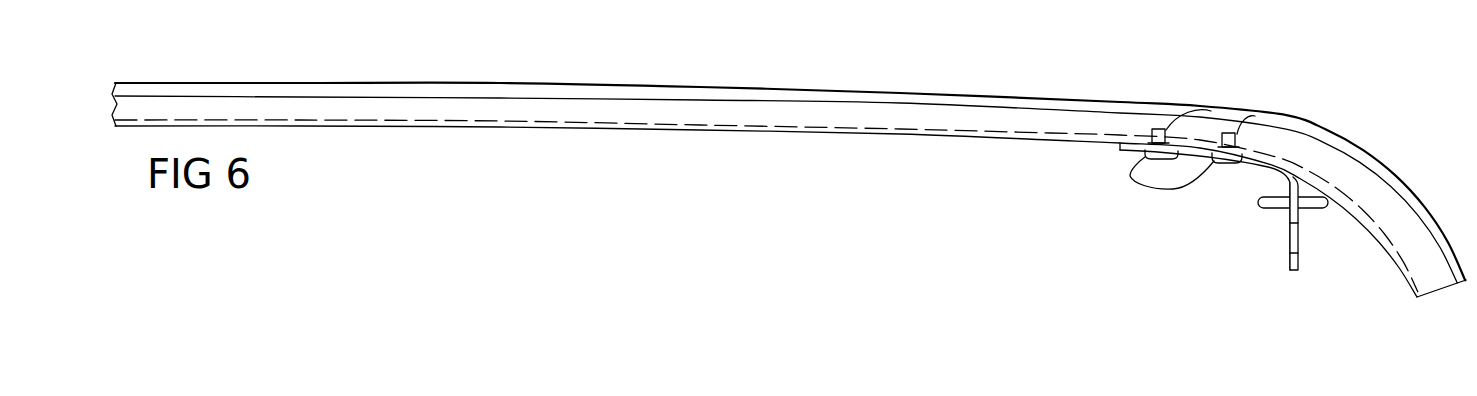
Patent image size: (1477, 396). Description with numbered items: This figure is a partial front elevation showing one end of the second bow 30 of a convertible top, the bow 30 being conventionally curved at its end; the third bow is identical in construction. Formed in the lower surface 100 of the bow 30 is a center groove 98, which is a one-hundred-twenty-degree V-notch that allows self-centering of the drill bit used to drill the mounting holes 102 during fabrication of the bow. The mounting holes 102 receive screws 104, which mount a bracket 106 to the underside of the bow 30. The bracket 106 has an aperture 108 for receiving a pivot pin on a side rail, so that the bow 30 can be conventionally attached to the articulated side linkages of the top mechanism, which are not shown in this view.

The #2 bow 30 is at (436, 133).
The center groove 98 is at (905, 135).
The lower surface 100 is at (793, 132).
The mounting holes 102 is at (1219, 105).
The screws 104 is at (1130, 176).
The bracket 106 is at (1298, 271).
The aperture 108 is at (1271, 247).